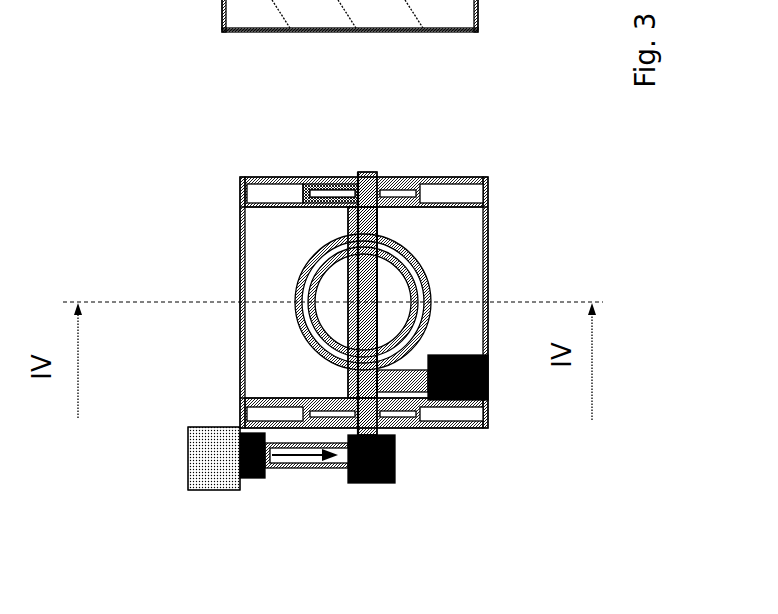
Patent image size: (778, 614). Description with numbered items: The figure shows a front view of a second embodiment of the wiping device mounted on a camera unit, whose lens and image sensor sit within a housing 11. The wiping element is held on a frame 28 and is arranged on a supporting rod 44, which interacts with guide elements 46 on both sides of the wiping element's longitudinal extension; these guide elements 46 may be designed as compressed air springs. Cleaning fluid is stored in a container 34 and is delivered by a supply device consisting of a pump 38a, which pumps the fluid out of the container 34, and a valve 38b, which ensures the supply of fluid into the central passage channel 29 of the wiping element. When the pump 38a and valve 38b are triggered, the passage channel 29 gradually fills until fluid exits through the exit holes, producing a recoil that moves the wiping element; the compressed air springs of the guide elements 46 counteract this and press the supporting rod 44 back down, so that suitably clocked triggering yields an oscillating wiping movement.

The housing 11 is at (273, 270).
The frame 28 is at (267, 188).
The passage channel 29 is at (360, 260).
The container 34 is at (207, 472).
The pump 38a is at (380, 488).
The valve 38b is at (490, 378).
The supporting rod 44 is at (377, 175).
The guide elements 46 is at (343, 180).